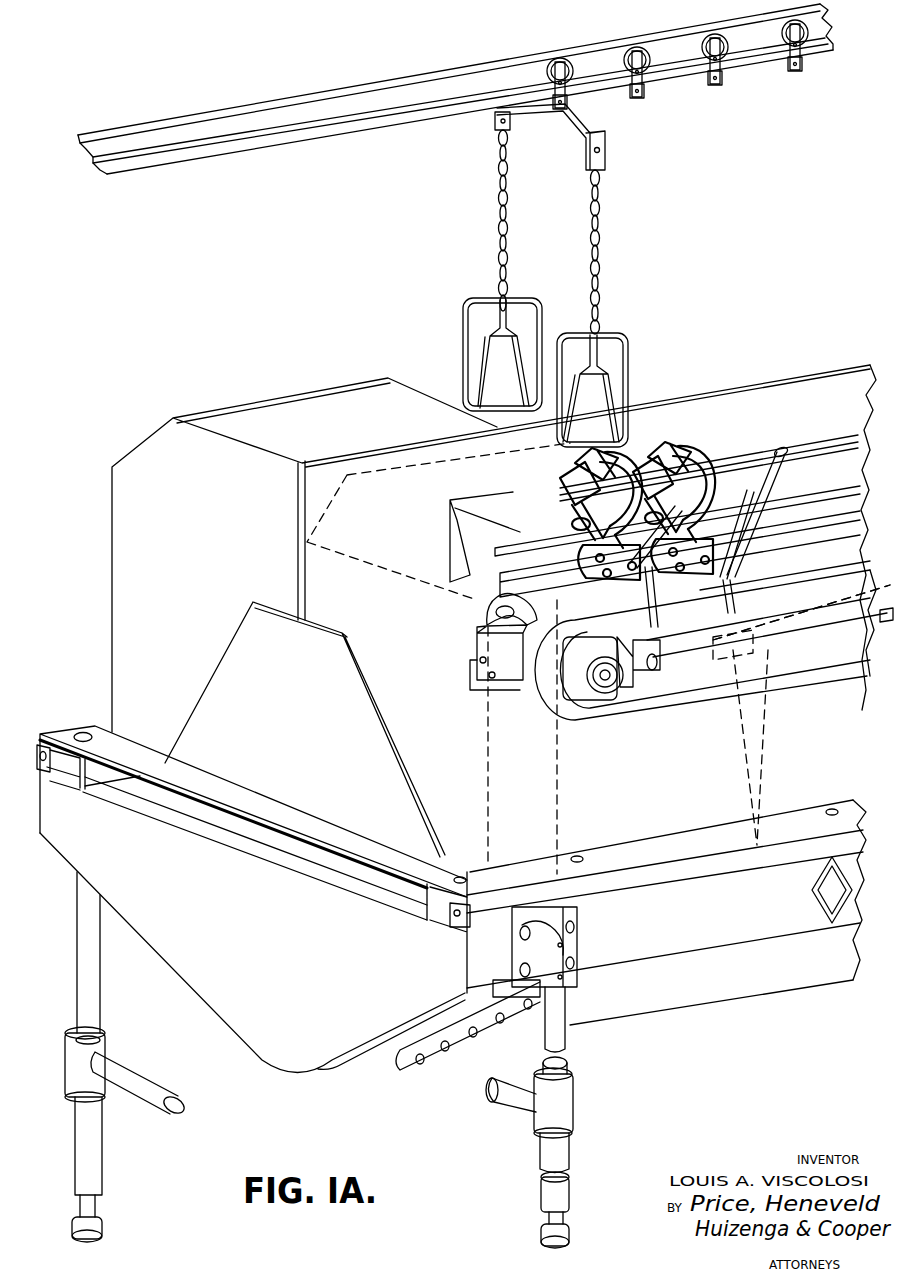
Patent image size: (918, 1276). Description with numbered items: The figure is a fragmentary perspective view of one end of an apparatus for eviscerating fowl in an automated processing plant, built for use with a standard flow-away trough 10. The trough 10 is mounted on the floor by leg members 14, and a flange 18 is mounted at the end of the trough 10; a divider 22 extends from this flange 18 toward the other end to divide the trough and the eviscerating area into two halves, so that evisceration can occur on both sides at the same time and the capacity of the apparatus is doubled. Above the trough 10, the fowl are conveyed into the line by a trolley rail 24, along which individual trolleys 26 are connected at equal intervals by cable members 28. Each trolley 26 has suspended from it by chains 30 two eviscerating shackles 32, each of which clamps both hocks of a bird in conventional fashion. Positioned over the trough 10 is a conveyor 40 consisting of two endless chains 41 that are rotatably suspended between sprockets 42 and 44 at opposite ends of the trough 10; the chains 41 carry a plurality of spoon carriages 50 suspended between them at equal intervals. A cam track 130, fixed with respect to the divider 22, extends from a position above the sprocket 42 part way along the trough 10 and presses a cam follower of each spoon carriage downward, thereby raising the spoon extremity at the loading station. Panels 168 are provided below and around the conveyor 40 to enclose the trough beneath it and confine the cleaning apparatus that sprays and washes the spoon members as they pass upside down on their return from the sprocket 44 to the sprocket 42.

The flow-away trough 10 is at (197, 986).
The leg member 14 is at (90, 994).
The flange 18 is at (286, 700).
The divider 22 is at (664, 412).
The trolley rail 24 is at (176, 132).
The trolley 26 is at (581, 127).
The cable member 28 is at (667, 84).
The chain 30 is at (601, 222).
The eviscerating shackle 32 is at (467, 310).
The conveyor 40 is at (793, 645).
The endless chain 41 is at (838, 506).
The sprocket 42 is at (487, 673).
The sprocket 44 is at (497, 618).
The spoon carriage 50 is at (668, 668).
The cam track 130 is at (800, 492).
The panel 168 is at (842, 670).